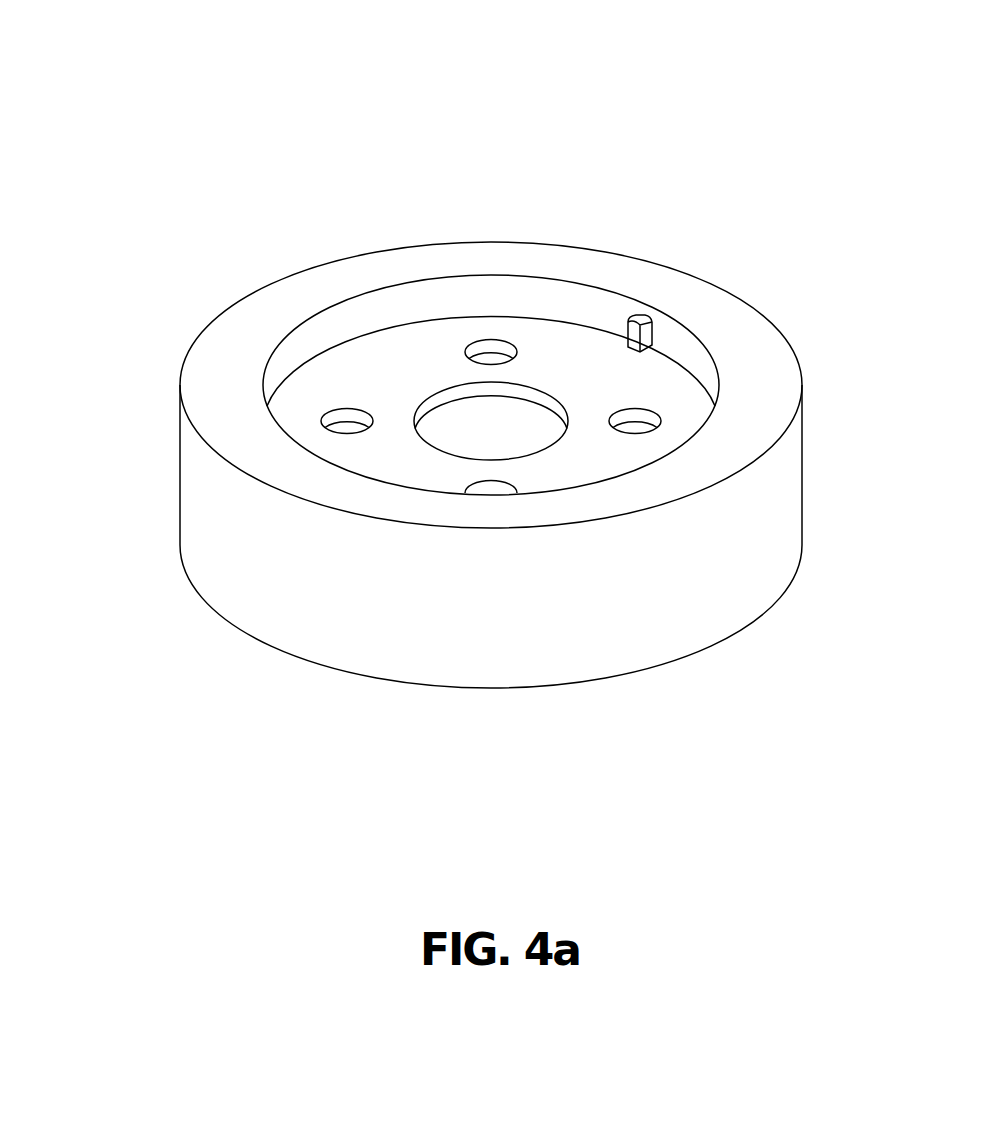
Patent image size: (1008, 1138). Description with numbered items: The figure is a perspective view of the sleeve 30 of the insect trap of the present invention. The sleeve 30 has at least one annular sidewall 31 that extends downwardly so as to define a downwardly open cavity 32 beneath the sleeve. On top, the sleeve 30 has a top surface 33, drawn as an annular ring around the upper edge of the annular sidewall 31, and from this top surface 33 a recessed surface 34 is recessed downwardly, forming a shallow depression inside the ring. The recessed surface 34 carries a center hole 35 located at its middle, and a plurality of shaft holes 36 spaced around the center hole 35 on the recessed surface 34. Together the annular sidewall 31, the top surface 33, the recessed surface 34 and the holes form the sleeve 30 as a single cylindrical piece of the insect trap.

The sleeve 30 is at (450, 432).
The annular sidewall 31 is at (258, 563).
The downwardly open cavity 32 is at (498, 682).
The top surface 33 is at (498, 257).
The recessed surface 34 is at (435, 342).
The center hole 35 is at (433, 395).
The shaft holes 36 is at (500, 342).